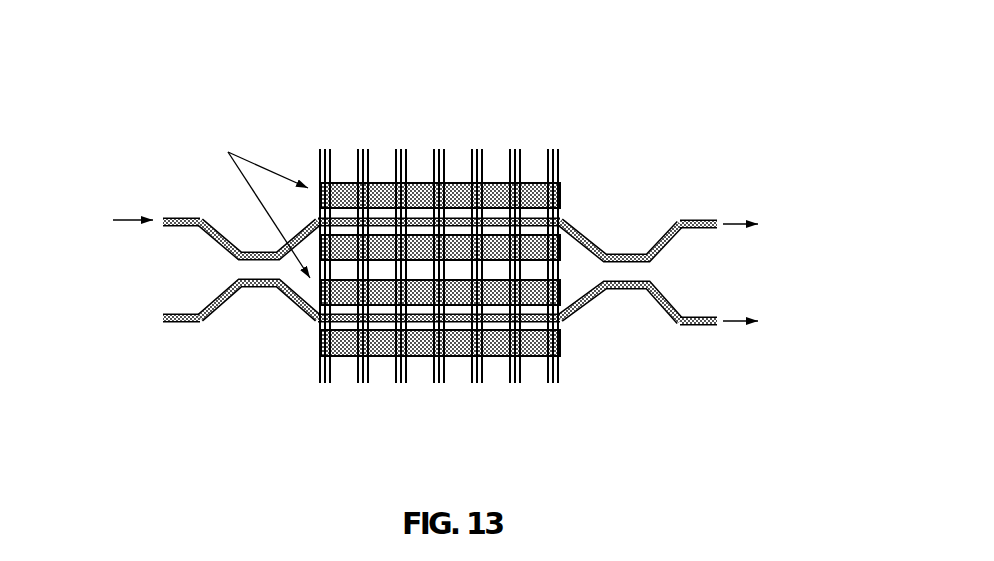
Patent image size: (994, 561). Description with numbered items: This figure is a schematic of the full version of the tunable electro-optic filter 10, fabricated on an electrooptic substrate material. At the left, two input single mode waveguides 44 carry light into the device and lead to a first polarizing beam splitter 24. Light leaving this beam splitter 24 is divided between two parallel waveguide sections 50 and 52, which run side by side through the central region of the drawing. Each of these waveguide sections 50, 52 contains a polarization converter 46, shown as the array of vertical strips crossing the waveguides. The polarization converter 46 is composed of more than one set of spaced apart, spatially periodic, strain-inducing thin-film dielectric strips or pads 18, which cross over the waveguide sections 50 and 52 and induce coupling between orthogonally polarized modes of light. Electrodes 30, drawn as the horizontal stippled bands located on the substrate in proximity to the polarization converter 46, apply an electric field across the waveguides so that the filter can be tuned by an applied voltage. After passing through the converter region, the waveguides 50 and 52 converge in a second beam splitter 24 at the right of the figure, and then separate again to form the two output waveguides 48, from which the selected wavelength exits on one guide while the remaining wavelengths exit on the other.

The filter 10 is at (620, 65).
The strain-inducing pads 18 is at (483, 382).
The beam splitter 24 is at (638, 216).
The electrodes 30 is at (632, 160).
The input single mode waveguides 44 is at (175, 307).
The polarization converter 46 is at (460, 230).
The output waveguides 48 is at (692, 340).
The waveguide section 50 is at (565, 220).
The waveguide section 52 is at (558, 323).